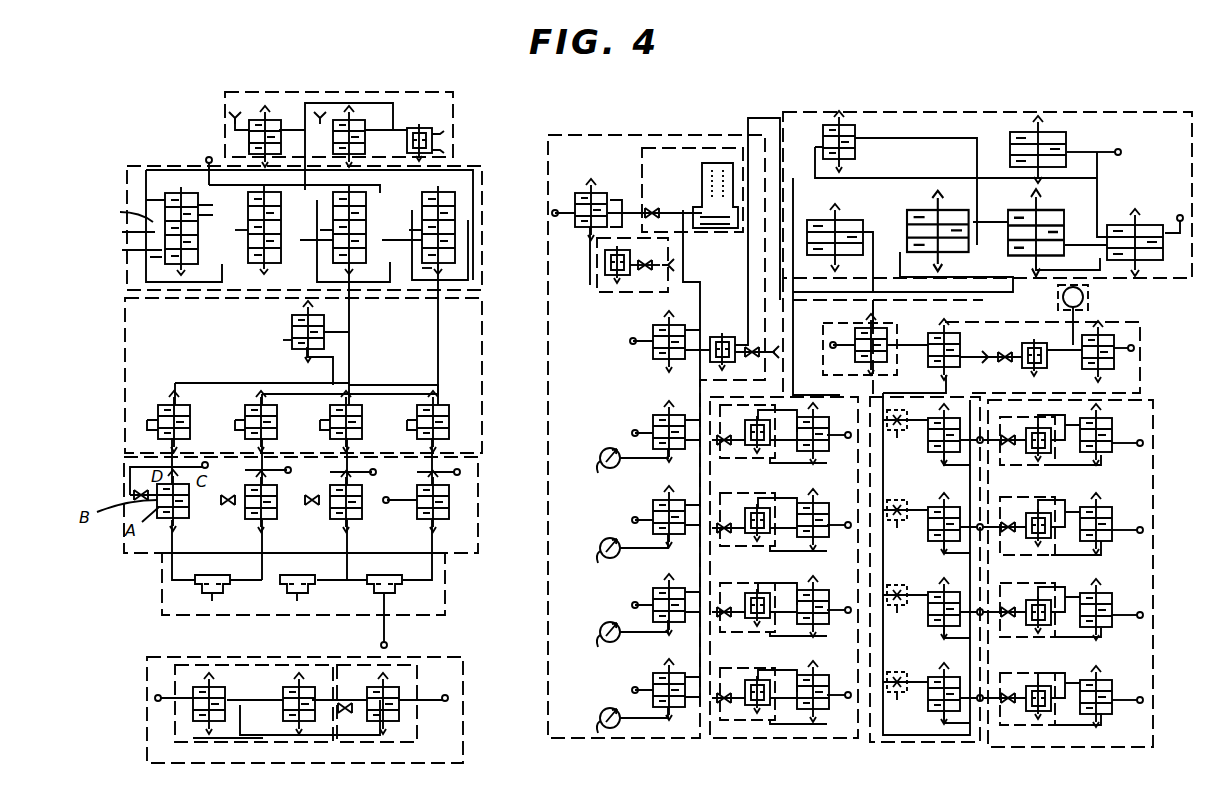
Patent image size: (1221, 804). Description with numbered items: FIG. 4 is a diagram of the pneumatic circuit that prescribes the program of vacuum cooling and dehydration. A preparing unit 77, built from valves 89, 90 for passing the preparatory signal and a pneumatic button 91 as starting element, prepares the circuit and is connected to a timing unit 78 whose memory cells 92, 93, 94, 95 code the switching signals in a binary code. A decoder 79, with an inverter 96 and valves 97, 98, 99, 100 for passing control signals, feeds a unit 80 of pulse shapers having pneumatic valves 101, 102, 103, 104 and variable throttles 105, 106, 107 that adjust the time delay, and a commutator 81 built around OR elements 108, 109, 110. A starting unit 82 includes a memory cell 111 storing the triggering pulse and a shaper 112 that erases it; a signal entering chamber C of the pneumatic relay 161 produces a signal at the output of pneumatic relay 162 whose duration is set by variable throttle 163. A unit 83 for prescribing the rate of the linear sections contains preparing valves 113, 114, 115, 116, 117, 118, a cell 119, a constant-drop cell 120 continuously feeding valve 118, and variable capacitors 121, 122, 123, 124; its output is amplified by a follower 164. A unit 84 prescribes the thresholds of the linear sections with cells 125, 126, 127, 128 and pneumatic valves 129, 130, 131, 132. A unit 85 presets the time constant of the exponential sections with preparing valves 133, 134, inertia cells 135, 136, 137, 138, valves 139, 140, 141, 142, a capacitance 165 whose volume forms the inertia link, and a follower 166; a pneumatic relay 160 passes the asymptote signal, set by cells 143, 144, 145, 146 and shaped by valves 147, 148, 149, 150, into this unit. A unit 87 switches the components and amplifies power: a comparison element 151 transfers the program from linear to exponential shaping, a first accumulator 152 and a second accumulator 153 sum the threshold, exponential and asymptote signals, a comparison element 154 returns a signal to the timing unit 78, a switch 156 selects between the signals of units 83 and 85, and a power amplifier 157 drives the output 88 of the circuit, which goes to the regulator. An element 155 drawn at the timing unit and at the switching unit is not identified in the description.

The preparing unit 77 is at (453, 108).
The timing unit 78 is at (482, 193).
The decoder 79 is at (482, 352).
The unit of pulse shapers 80 is at (478, 512).
The commutator 81 is at (445, 600).
The starting unit 82 is at (463, 683).
The unit for prescribing the rate of setting the linear sections 83 is at (663, 133).
The unit for prescribing the threshold of the linear sections 84 is at (737, 748).
The unit for prescribing the time constant of the exponential sections 85 is at (1153, 413).
The switching and power amplification unit 87 is at (820, 110).
The output of the circuit 88 is at (1116, 149).
The valve 89 is at (261, 128).
The valve 90 is at (337, 118).
The pneumatic button 91 is at (422, 129).
The memory cell 92 is at (168, 196).
The memory cell 93 is at (265, 266).
The memory cell 94 is at (343, 295).
The memory cell 95 is at (455, 200).
The inverter 96 is at (292, 320).
The valve 97 is at (168, 405).
The valve 98 is at (245, 411).
The valve 99 is at (330, 411).
The valve 100 is at (417, 421).
The pneumatic valve 101 is at (168, 518).
The pneumatic valve 102 is at (255, 485).
The pneumatic valve 103 is at (365, 480).
The pneumatic valve 104 is at (420, 522).
The variable throttle 105 is at (137, 492).
The variable throttle 106 is at (226, 508).
The variable throttle 107 is at (310, 508).
The OR element 108 is at (200, 594).
The OR element 109 is at (291, 595).
The OR element 110 is at (403, 611).
The memory cell 111 is at (208, 756).
The shaper 112 is at (418, 725).
The valve 113 is at (582, 193).
The valve 114 is at (665, 325).
The valve 115 is at (665, 415).
The valve 116 is at (668, 493).
The valve 117 is at (668, 581).
The valve 118 is at (668, 666).
The cell 119 is at (705, 233).
The constant-drop cell 120 is at (627, 290).
The variable capacitor 121 is at (622, 448).
The variable capacitor 122 is at (622, 538).
The variable capacitor 123 is at (619, 622).
The variable capacitor 124 is at (619, 708).
The cell 125 is at (758, 462).
The cell 126 is at (758, 550).
The cell 127 is at (758, 636).
The cell 128 is at (775, 722).
The pneumatic valve 129 is at (800, 462).
The pneumatic valve 130 is at (822, 503).
The pneumatic valve 131 is at (816, 590).
The pneumatic valve 132 is at (815, 675).
The pneumatic valve 133 is at (1108, 372).
The pneumatic valve 134 is at (848, 315).
The inertia cell 135 is at (905, 442).
The inertia cell 136 is at (905, 532).
The inertia cell 137 is at (905, 617).
The inertia cell 138 is at (905, 703).
The pneumatic valve 139 is at (950, 412).
The pneumatic valve 140 is at (950, 500).
The pneumatic valve 141 is at (950, 585).
The pneumatic valve 142 is at (950, 670).
The cell 143 is at (1010, 468).
The cell 144 is at (1055, 555).
The cell 145 is at (1012, 640).
The cell 146 is at (1025, 728).
The pneumatic valve 147 is at (1085, 462).
The pneumatic valve 148 is at (1100, 500).
The pneumatic valve 149 is at (1096, 593).
The pneumatic valve 150 is at (1098, 672).
The comparison element 151 is at (823, 205).
The first accumulator 152 is at (915, 196).
The second accumulator 153 is at (1018, 196).
The comparison element 154 is at (1118, 220).
The port 155 is at (689, 182).
The switch 156 is at (823, 130).
The power amplifier 157 is at (1010, 132).
The pneumatic relay 160 is at (960, 343).
The pneumatic relay 161 is at (352, 265).
The pneumatic relay 162 is at (432, 270).
The variable throttle 163 is at (347, 716).
The follower 164 is at (723, 326).
The capacitance 165 is at (1088, 292).
The follower 166 is at (1025, 368).